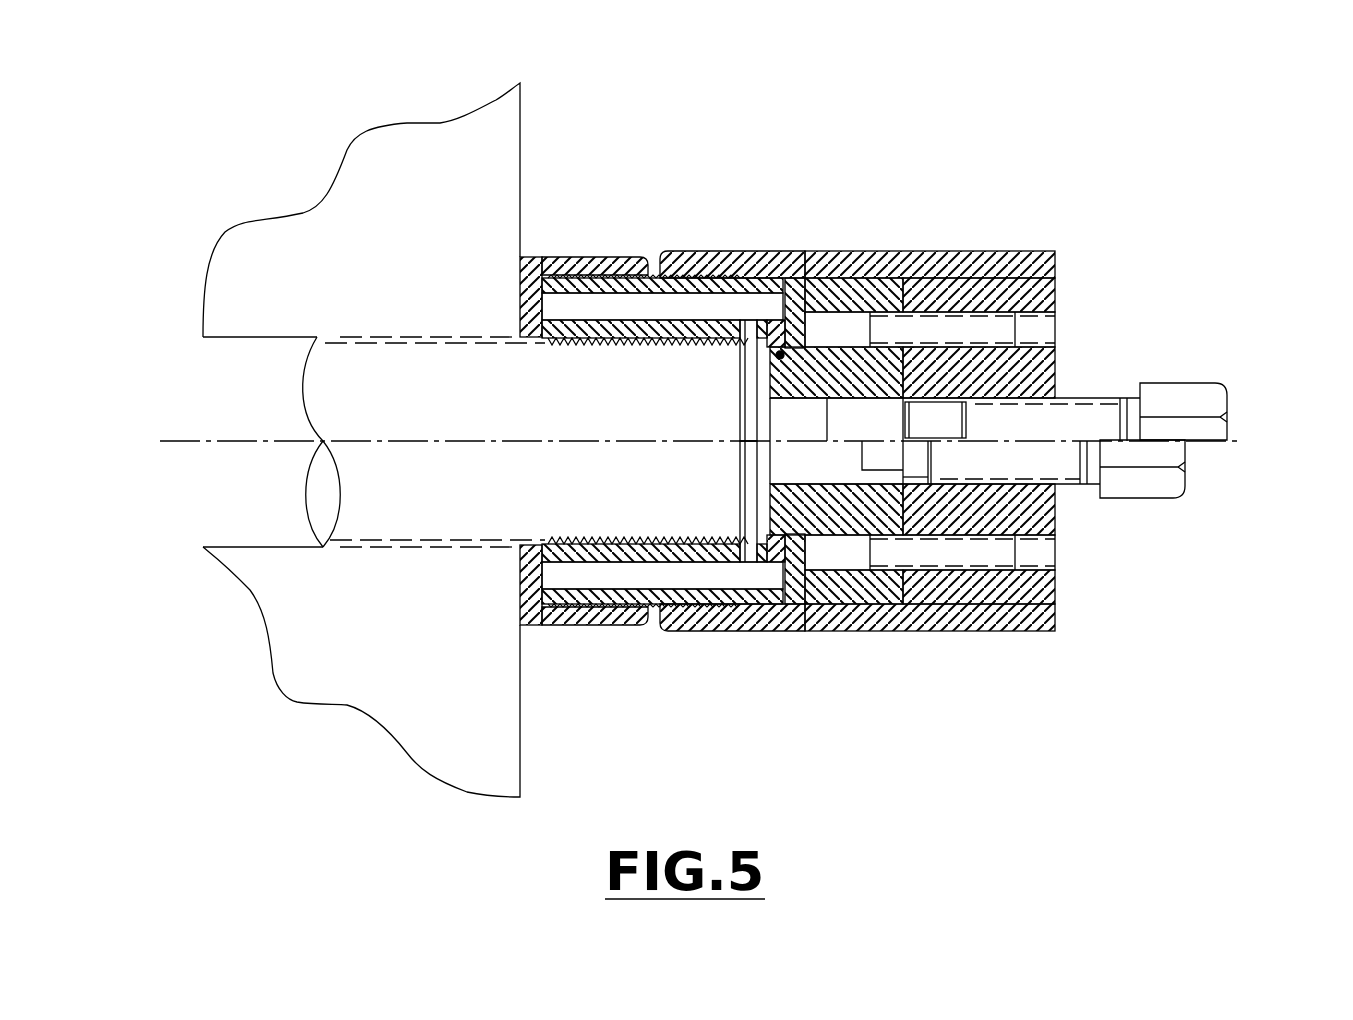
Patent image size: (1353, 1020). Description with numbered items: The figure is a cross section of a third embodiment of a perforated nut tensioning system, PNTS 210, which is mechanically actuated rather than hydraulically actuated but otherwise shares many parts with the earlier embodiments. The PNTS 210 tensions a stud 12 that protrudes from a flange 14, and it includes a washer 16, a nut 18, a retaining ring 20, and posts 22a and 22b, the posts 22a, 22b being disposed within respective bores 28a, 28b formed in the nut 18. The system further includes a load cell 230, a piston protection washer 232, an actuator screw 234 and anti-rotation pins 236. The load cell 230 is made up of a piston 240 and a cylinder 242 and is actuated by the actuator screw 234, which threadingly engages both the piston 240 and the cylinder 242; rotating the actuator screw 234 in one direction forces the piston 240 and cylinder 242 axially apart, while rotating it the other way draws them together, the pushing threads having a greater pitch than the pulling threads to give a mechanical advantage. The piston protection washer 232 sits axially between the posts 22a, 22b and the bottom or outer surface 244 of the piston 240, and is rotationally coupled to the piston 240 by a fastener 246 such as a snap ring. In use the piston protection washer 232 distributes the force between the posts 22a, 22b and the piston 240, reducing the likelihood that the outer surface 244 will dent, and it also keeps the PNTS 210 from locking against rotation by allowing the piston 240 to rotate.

The stud 12 is at (399, 409).
The flange 14 is at (437, 673).
The washer 16 is at (528, 257).
The nut 18 is at (625, 257).
The retaining ring 20 is at (588, 257).
The post 22a is at (752, 306).
The post 22b is at (690, 592).
The bore 28a is at (704, 302).
The bore 28b is at (627, 562).
The perforated nut tensioning system 210 is at (1008, 101).
The load cell 230 is at (902, 600).
The piston protection washer 232 is at (795, 604).
The actuator screw 234 is at (1207, 394).
The anti-rotation pins 236 is at (968, 328).
The piston 240 is at (858, 292).
The cylinder 242 is at (1027, 513).
The outer surface 244 is at (756, 508).
The fastener 246 is at (780, 355).